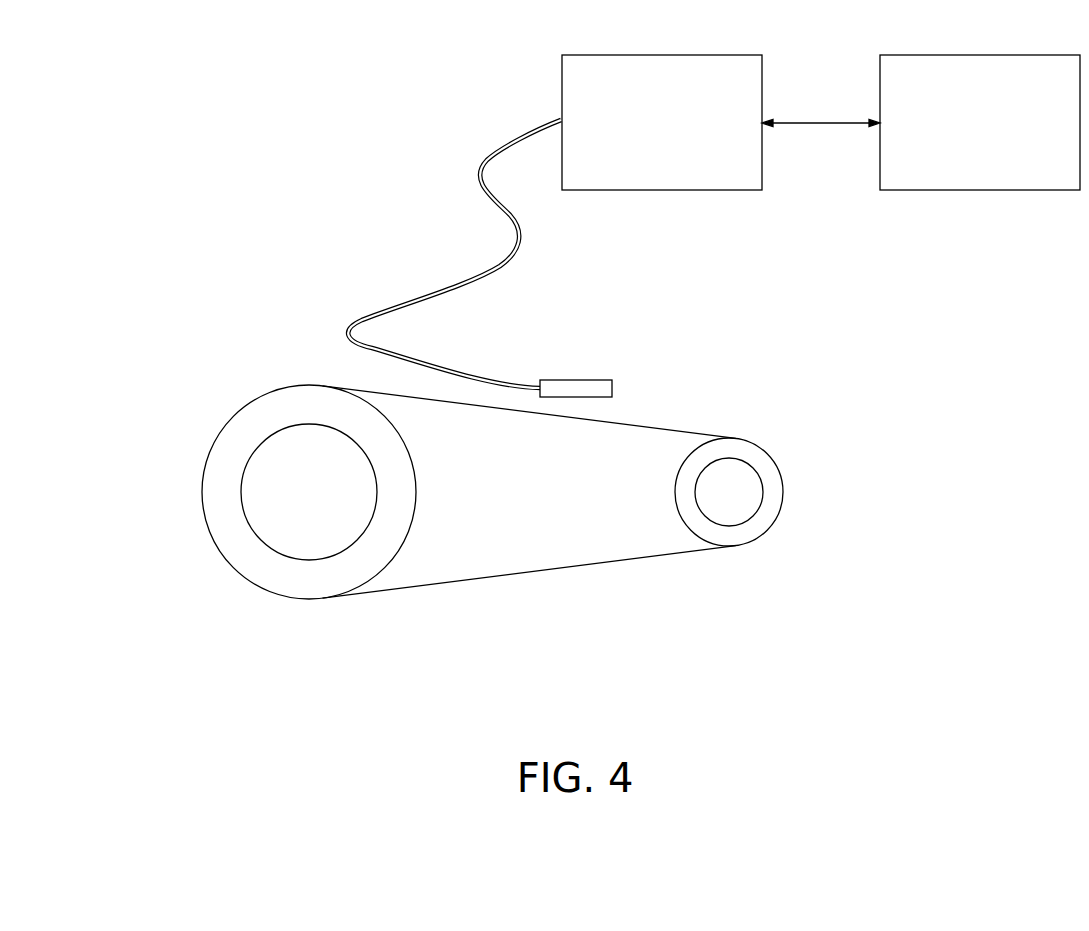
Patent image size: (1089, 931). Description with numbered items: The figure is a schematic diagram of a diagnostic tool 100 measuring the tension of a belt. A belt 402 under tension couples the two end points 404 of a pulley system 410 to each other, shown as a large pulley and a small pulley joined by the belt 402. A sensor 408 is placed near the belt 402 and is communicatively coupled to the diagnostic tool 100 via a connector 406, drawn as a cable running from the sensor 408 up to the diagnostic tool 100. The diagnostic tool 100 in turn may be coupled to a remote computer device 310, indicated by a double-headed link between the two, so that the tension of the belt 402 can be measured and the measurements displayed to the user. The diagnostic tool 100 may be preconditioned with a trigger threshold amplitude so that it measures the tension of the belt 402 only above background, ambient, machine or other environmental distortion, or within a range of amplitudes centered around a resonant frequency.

The diagnostic tool 100 is at (662, 122).
The remote computer device 310 is at (980, 122).
The belt 402 is at (489, 602).
The end point of pulley system 404 is at (245, 378).
The connector 406 is at (428, 258).
The sensor 408 is at (598, 353).
The pulley system 410 is at (258, 617).